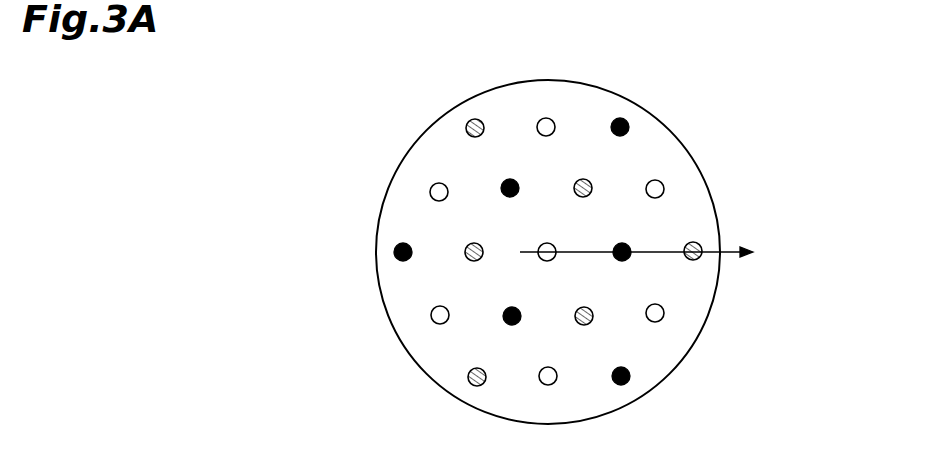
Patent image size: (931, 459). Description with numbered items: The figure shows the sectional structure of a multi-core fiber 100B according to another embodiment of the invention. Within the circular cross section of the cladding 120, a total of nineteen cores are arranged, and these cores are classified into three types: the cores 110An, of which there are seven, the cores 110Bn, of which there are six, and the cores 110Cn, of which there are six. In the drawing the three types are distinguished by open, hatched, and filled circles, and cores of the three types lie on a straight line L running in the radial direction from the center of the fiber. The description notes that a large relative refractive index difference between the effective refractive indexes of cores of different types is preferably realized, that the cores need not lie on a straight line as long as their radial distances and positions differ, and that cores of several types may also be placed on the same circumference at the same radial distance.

The multi-core fiber 100B is at (705, 121).
The cladding 120 is at (443, 158).
The cores (first type) 110An is at (538, 250).
The cores (second type) 110Bn is at (592, 187).
The cores (third type) 110Cn is at (630, 254).